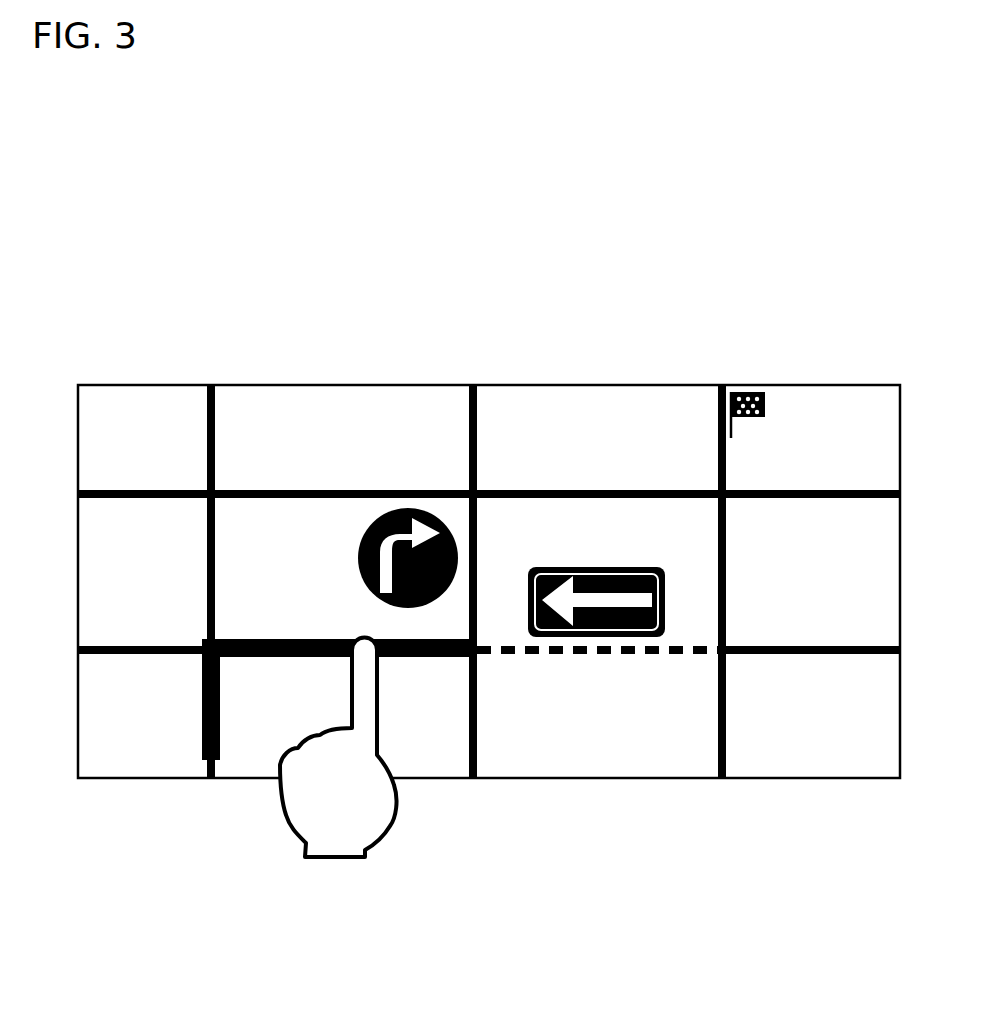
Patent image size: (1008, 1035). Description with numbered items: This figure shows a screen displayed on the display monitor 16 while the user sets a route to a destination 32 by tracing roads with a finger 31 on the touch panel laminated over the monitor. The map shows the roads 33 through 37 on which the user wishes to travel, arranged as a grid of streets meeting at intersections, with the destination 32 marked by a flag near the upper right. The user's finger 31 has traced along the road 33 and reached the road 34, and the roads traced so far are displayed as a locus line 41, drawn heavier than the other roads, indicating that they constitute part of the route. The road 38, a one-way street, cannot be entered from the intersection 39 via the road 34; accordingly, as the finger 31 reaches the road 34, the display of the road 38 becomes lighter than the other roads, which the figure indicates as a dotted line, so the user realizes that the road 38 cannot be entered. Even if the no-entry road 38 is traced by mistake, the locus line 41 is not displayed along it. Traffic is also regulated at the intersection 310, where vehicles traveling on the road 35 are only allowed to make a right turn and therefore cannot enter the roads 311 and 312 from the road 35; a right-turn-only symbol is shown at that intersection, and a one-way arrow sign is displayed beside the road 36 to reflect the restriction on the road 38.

The display monitor 16 is at (700, 385).
The finger 31 is at (362, 683).
The destination 32 is at (752, 392).
The road 33 is at (220, 690).
The road 34 is at (301, 638).
The road 35 is at (477, 548).
The road 36 is at (631, 490).
The road 37 is at (733, 440).
The road 38 is at (580, 655).
The intersection 39 is at (460, 660).
The locus line 41 is at (249, 638).
The intersection 310 is at (476, 488).
The road 311 is at (476, 428).
The road 312 is at (330, 490).